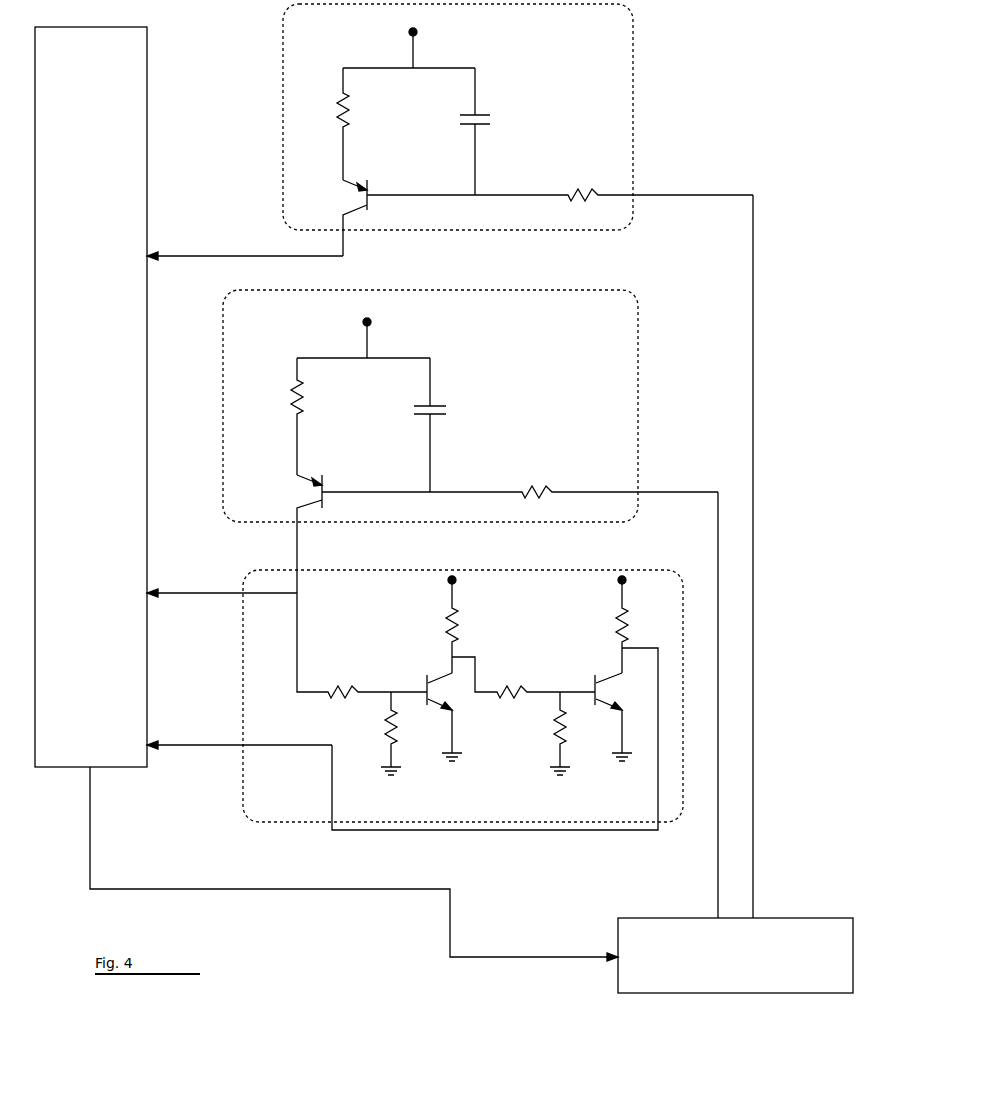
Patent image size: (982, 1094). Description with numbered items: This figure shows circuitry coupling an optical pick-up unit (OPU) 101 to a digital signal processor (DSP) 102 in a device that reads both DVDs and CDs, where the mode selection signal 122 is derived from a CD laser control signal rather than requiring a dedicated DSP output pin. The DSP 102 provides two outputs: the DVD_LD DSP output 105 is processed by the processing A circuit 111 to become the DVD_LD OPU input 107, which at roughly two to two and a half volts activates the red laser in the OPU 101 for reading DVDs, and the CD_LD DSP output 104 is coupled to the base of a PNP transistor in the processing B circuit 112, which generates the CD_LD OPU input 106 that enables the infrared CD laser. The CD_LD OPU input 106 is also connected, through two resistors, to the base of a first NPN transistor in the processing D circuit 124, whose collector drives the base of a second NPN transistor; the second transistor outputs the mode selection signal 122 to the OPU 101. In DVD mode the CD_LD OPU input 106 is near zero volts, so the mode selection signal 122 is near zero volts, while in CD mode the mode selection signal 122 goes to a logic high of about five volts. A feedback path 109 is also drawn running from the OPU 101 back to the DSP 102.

The optical pick-up unit (OPU) 101 is at (91, 397).
The digital signal processor (DSP) 102 is at (735, 955).
The CD_LD DSP output 104 is at (662, 705).
The DVD_LD DSP output 105 is at (797, 556).
The CD_LD OPU input 106 is at (222, 564).
The DVD_LD OPU input 107 is at (245, 227).
The feedback 109 is at (354, 864).
The processing A circuit 111 is at (518, 130).
The processing B circuit 112 is at (470, 441).
The mode selection signal 122 is at (239, 718).
The processing D circuit 124 is at (464, 700).